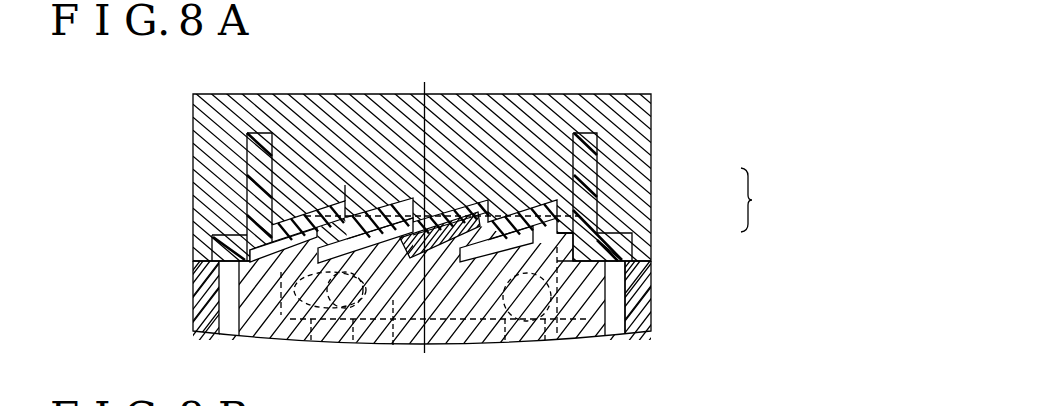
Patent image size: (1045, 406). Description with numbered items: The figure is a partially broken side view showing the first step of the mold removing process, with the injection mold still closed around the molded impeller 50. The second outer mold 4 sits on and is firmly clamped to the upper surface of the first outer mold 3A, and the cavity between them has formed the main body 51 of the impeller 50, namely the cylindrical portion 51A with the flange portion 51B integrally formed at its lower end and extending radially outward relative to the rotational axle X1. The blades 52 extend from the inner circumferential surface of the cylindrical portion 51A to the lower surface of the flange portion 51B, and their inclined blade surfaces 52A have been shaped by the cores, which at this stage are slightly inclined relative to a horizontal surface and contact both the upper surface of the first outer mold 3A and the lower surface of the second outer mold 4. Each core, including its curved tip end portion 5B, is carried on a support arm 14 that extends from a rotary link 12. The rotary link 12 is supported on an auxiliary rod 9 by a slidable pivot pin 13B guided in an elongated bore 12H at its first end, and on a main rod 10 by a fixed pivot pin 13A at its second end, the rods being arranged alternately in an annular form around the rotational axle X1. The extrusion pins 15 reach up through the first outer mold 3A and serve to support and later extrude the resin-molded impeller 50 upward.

The second outer mold 4 is at (650, 122).
The first outer mold 3A is at (651, 291).
The extrusion pin 15 is at (228, 303).
The impeller 50 is at (247, 159).
The cylindrical portion 51A is at (592, 179).
The flange portion 51B is at (632, 240).
The main body 51 is at (763, 200).
The blade 52 is at (380, 208).
The blade surface 52A is at (524, 213).
The rotational axle X1 is at (418, 88).
The tip end portion 5B is at (478, 360).
The elongated bore 12H is at (291, 335).
The slidable pivot pin 13B is at (325, 343).
The auxiliary rod 9 is at (347, 348).
The support arm 14 is at (393, 346).
The fixed pivot pin 13A is at (520, 333).
The main rod 10 is at (572, 333).
The rotary link 12 is at (592, 335).